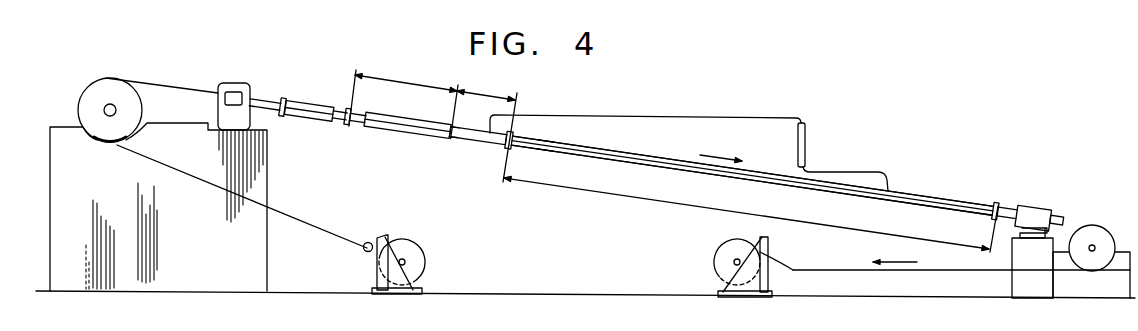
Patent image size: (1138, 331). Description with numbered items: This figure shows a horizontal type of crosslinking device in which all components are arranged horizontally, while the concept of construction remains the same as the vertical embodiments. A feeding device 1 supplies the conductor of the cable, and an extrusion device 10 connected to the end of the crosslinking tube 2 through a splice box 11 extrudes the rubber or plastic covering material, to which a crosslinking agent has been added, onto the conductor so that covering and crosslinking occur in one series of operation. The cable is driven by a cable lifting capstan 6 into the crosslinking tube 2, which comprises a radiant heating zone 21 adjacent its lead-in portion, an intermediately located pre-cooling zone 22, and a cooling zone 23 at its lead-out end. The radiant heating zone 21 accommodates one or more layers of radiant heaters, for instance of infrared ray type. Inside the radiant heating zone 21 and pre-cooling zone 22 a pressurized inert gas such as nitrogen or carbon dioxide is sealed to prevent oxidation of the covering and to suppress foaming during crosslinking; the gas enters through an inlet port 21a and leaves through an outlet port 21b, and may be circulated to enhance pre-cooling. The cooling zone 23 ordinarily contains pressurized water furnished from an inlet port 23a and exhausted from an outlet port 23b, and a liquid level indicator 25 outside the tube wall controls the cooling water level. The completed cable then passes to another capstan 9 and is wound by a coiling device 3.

The feeding device 1 is at (411, 250).
The crosslinking tube 2 is at (624, 153).
The coiling device 3 is at (728, 252).
The cable lifting capstan 6 is at (118, 143).
The capstan 9 is at (1097, 234).
The extrusion device 10 is at (228, 92).
The splice box 11 is at (318, 113).
The radiant heating zone 21 is at (422, 113).
The inlet port 21a is at (356, 127).
The outlet port 21b is at (457, 141).
The pre-cooling zone 22 is at (481, 116).
The cooling zone 23 is at (701, 205).
The inlet port 23a is at (979, 219).
The outlet port 23b is at (548, 156).
The liquid level indicator 25 is at (806, 141).